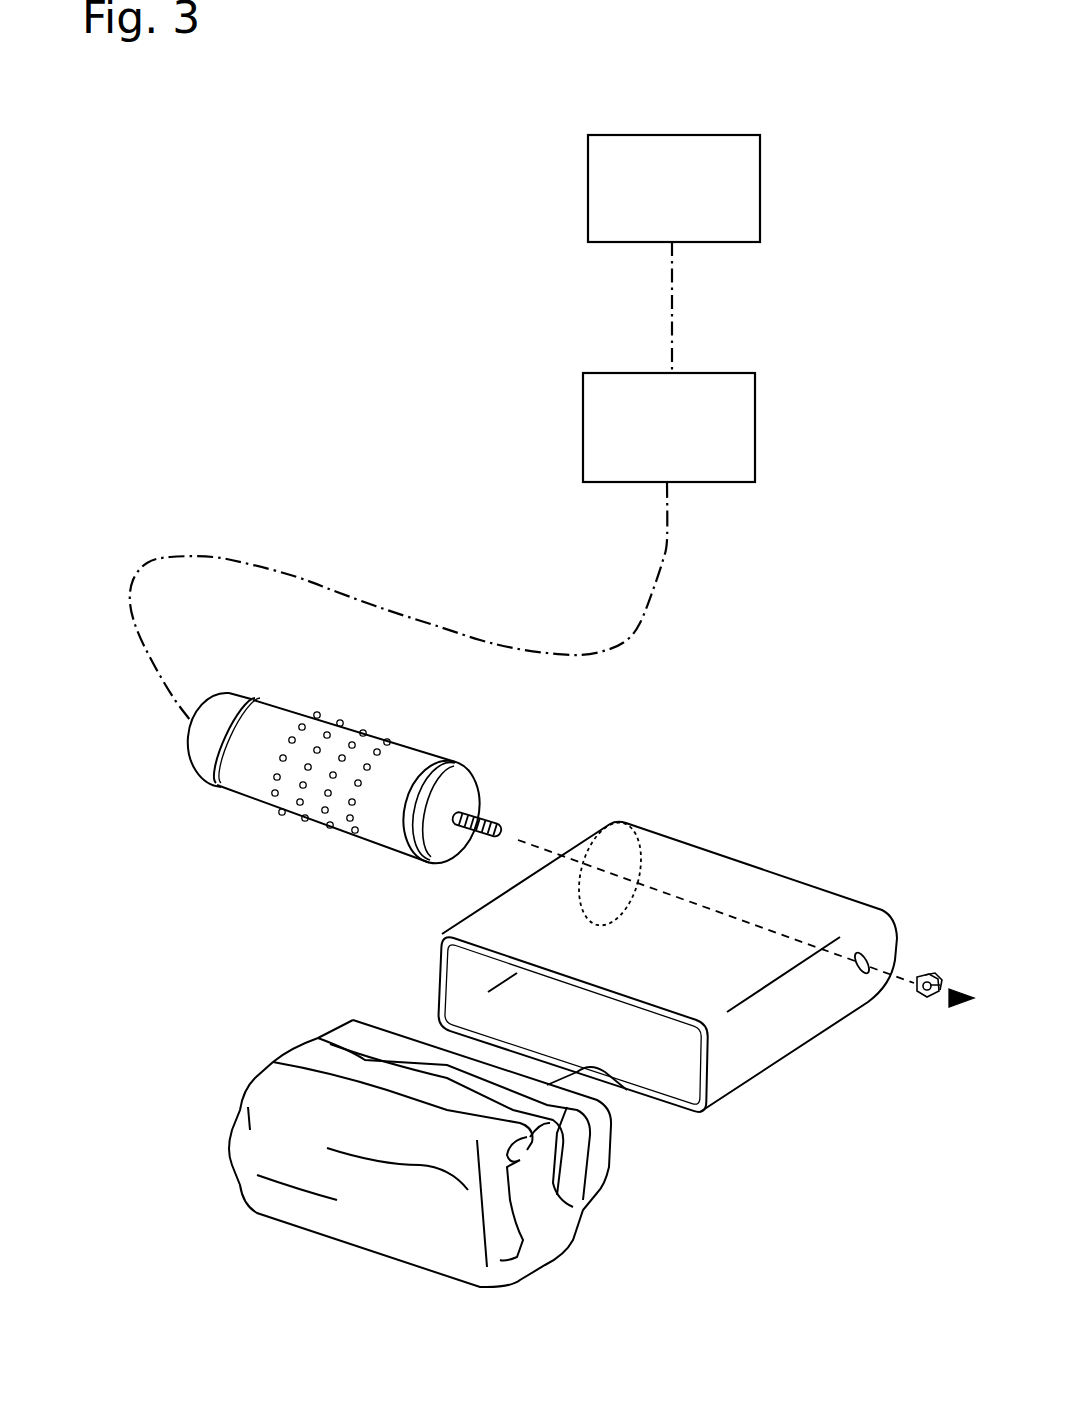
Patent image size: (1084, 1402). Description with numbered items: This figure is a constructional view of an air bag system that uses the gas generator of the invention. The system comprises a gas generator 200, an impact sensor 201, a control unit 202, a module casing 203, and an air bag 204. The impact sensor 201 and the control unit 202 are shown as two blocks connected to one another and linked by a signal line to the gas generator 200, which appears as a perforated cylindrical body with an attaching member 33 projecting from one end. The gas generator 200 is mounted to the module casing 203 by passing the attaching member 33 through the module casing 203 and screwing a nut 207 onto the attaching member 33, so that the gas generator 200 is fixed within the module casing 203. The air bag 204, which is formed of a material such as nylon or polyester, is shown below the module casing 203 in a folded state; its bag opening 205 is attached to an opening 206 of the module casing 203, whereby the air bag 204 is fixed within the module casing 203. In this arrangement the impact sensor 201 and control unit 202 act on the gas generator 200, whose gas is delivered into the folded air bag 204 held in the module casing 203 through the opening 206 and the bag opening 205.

The attaching member 33 is at (490, 813).
The gas generator 200 is at (209, 817).
The impact sensor 201 is at (723, 192).
The control unit 202 is at (717, 437).
The module casing 203 is at (773, 887).
The air bag 204 is at (412, 1230).
The bag opening 205 is at (630, 1092).
The opening 206 is at (622, 997).
The nut 207 is at (932, 998).